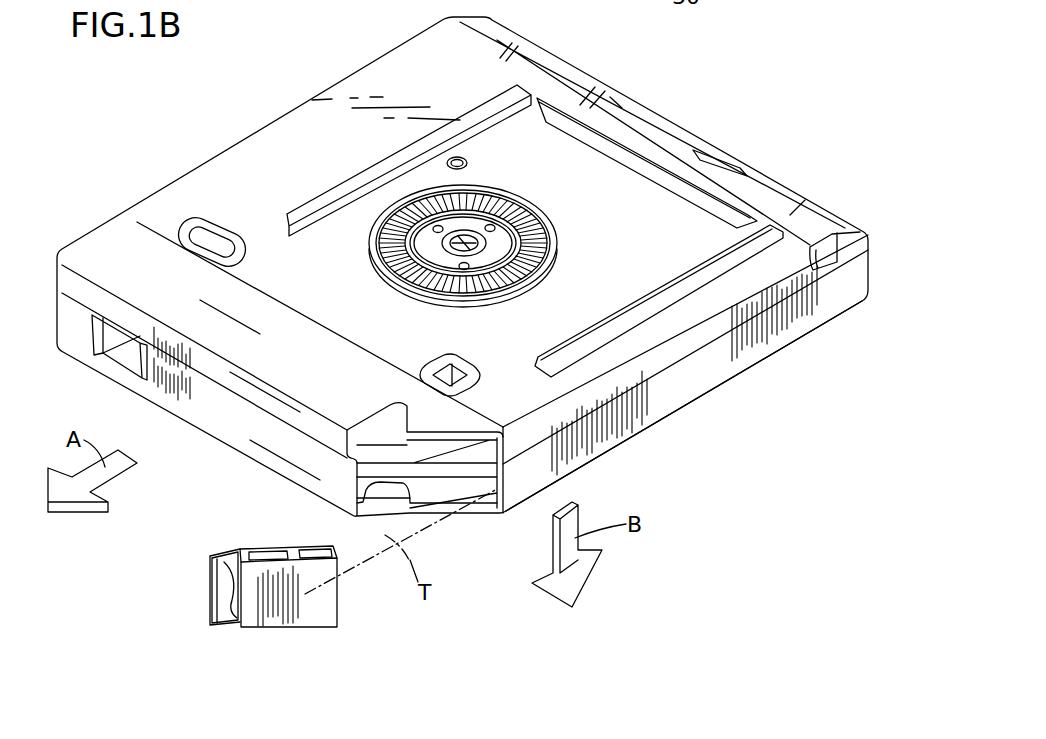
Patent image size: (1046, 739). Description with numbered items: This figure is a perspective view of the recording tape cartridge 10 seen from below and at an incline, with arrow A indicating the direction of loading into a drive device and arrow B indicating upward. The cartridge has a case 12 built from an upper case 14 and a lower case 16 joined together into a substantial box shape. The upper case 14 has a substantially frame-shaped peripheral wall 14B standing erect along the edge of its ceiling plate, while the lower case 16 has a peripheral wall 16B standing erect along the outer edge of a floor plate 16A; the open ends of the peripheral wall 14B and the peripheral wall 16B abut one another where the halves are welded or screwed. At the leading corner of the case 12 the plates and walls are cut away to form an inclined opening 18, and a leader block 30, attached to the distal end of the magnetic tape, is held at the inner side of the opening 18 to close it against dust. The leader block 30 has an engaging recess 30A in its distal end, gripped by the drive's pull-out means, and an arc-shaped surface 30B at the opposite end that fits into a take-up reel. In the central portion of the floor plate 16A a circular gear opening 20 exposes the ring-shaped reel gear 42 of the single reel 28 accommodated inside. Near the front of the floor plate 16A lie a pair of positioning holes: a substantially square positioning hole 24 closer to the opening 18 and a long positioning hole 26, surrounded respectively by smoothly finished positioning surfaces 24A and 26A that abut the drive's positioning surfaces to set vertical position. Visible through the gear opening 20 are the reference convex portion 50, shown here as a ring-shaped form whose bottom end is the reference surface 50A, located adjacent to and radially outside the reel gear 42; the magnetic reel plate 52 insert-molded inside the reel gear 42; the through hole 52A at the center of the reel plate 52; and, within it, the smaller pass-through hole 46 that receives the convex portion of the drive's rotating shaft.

The recording tape cartridge 10 is at (272, 101).
The case 12 is at (781, 372).
The upper case 14 is at (675, 383).
The peripheral wall 14B is at (283, 463).
The lower case 16 is at (677, 344).
The floor plate 16A is at (247, 347).
The peripheral wall 16B is at (263, 402).
The opening 18 is at (377, 430).
The gear opening 20 is at (560, 227).
The positioning hole 24 is at (462, 360).
The positioning surface 24A is at (437, 362).
The positioning hole 26 is at (224, 236).
The positioning surface 26A is at (202, 243).
The reel 28 is at (547, 213).
The leader block 30 is at (343, 617).
The engaging recess 30A is at (210, 578).
The arc-shaped surface 30B is at (350, 538).
The reel gear 42 is at (522, 197).
The pass-through hole 46 is at (548, 258).
The reference convex portion 50 is at (380, 271).
The reference surface 50A is at (373, 253).
The reel plate 52 is at (476, 218).
The through hole 52A is at (492, 236).